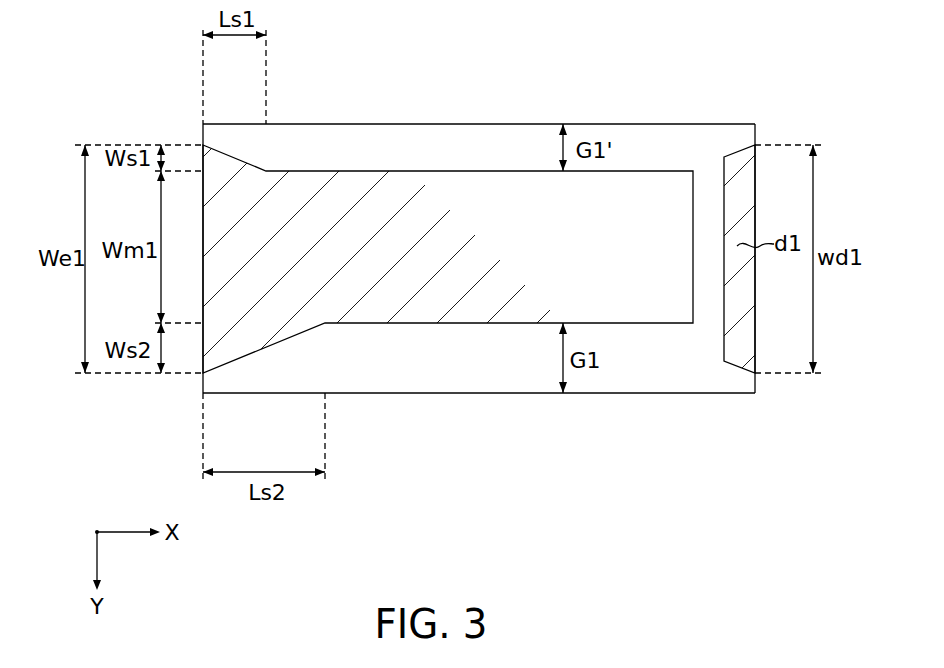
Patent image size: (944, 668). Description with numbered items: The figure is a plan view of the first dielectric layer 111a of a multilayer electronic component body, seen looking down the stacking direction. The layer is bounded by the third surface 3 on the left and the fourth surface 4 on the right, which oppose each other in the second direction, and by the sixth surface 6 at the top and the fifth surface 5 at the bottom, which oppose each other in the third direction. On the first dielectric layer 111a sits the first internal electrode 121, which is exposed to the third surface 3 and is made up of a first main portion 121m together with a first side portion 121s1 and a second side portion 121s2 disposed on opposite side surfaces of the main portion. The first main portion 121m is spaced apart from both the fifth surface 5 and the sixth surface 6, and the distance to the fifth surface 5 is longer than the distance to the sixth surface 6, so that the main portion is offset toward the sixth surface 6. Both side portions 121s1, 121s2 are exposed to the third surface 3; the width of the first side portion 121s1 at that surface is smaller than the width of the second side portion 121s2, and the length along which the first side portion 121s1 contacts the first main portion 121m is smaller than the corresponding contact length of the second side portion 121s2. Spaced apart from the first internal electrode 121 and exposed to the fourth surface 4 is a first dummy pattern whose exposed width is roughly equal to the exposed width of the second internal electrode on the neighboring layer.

The third surface 3 is at (197, 128).
The fourth surface 4 is at (760, 126).
The fifth surface 5 is at (552, 397).
The sixth surface 6 is at (576, 121).
The first dielectric layer 111a is at (670, 146).
The first internal electrode 121 is at (500, 56).
The first side portion 121s1 is at (250, 162).
The first main portion 121m is at (398, 200).
The second side portion 121s2 is at (285, 298).